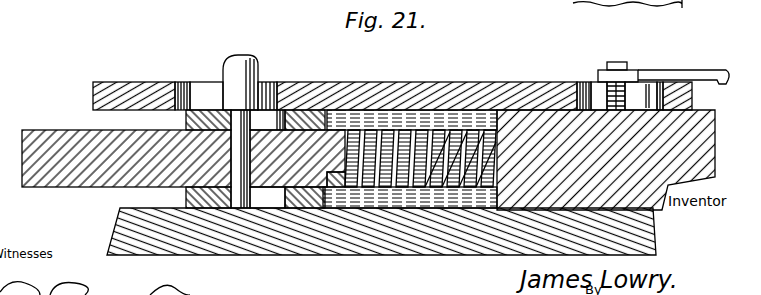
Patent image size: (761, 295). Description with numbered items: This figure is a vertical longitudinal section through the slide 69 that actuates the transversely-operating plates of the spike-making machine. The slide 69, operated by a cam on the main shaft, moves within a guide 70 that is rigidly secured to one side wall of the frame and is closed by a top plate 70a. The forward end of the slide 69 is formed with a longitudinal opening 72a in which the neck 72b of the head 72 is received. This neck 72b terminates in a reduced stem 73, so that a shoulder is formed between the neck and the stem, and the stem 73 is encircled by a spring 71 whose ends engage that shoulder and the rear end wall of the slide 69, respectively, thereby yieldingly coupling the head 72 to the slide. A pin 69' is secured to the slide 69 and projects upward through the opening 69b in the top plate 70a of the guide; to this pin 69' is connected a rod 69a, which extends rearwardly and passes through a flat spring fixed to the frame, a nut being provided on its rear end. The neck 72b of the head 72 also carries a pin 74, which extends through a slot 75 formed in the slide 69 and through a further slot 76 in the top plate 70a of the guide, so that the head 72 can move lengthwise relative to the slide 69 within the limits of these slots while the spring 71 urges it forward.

The slide 69 is at (606, 124).
The rod 69a is at (668, 60).
The opening 69b is at (592, 80).
The pin 69' is at (639, 78).
The guide 70 is at (315, 240).
The top plate 70a is at (437, 85).
The spring 71 is at (452, 130).
The head 72 is at (67, 152).
The longitudinal opening 72a is at (312, 185).
The neck 72b is at (288, 143).
The reduced stem 73 is at (382, 130).
The pin 74 is at (230, 62).
The slot 75 is at (263, 117).
The slot 76 is at (188, 83).